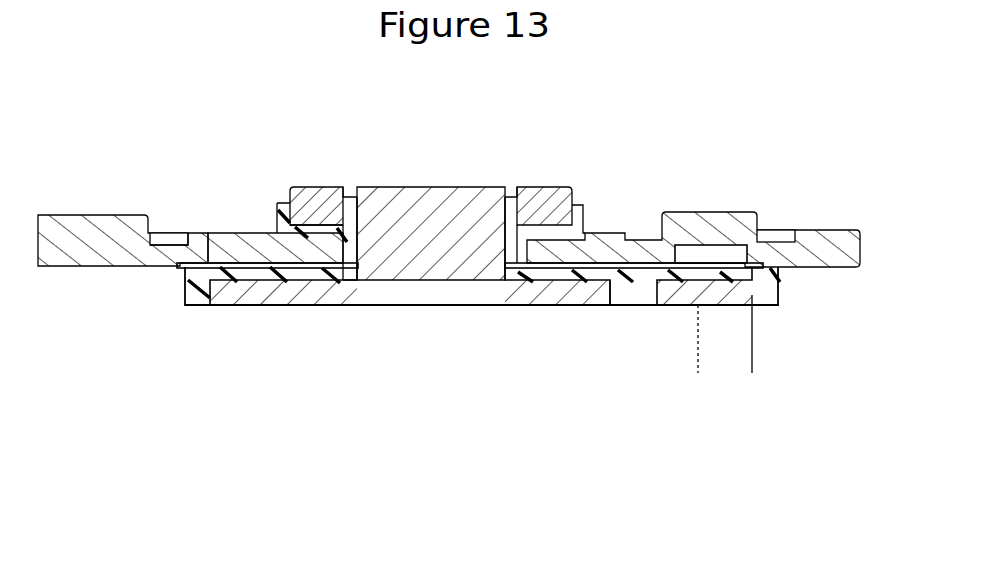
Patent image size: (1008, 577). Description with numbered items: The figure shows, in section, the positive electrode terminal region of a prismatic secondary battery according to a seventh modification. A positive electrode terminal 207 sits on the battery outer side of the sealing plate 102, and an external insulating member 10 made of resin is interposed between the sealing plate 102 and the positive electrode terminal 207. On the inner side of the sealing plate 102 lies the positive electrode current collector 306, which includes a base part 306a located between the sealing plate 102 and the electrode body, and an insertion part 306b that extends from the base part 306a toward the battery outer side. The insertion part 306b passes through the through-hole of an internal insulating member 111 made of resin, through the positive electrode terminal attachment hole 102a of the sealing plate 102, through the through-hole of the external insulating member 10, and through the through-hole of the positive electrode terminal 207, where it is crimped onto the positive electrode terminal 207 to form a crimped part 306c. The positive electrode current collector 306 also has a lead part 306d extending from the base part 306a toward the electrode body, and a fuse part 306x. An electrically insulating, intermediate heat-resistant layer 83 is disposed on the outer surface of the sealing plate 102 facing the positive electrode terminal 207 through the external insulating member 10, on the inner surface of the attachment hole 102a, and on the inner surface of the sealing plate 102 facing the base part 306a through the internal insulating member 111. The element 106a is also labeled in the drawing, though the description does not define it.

The external insulating member 10 is at (578, 215).
The electrically insulating, intermediate heat-resistant layer 83 is at (290, 200).
The sealing plate 102 is at (822, 250).
The positive electrode terminal attachment hole 102a is at (318, 272).
The cover portion 106a is at (213, 285).
The internal insulating member 111 is at (250, 275).
The positive electrode terminal 207 is at (313, 197).
The positive electrode current collector 306 is at (534, 278).
The base part 306a is at (573, 305).
The insertion part 306b is at (445, 250).
The crimped part 306c is at (355, 205).
The lead part 306d is at (727, 348).
The fuse part 306x is at (618, 293).